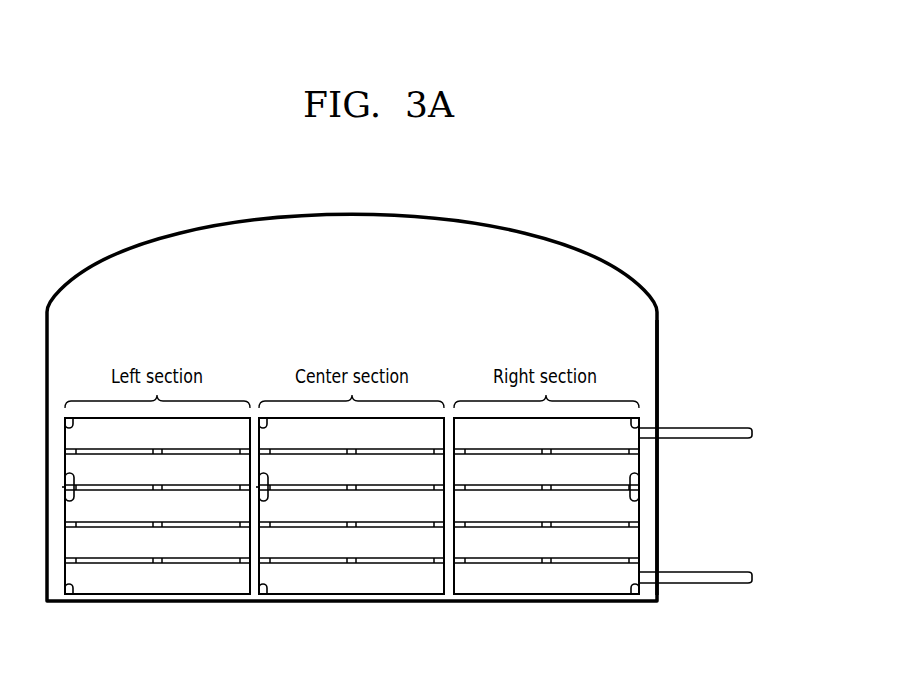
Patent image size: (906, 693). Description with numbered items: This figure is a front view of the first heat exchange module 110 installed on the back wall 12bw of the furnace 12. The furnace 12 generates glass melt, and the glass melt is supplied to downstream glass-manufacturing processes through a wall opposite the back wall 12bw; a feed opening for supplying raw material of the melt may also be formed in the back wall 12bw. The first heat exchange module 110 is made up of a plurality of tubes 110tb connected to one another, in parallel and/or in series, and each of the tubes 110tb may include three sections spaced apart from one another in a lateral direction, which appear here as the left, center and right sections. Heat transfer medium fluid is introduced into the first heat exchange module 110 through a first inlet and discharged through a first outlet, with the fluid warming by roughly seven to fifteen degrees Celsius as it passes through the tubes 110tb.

The furnace 12 is at (571, 209).
The back wall 12bw is at (633, 371).
The first heat exchange module 110 is at (419, 521).
The tubes 110tb is at (523, 583).